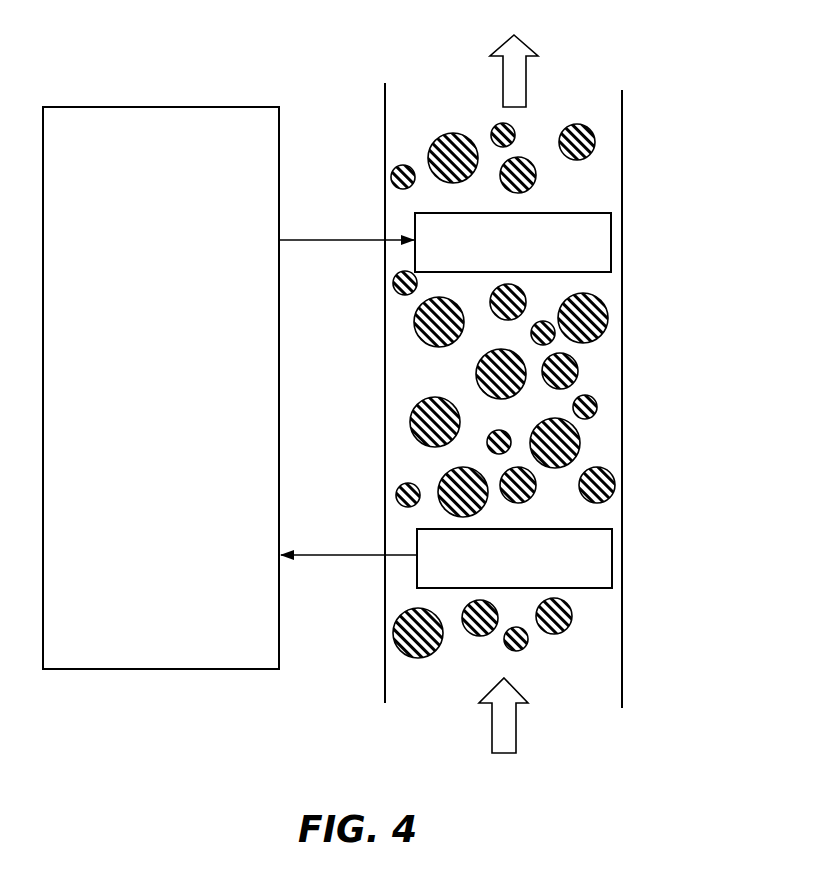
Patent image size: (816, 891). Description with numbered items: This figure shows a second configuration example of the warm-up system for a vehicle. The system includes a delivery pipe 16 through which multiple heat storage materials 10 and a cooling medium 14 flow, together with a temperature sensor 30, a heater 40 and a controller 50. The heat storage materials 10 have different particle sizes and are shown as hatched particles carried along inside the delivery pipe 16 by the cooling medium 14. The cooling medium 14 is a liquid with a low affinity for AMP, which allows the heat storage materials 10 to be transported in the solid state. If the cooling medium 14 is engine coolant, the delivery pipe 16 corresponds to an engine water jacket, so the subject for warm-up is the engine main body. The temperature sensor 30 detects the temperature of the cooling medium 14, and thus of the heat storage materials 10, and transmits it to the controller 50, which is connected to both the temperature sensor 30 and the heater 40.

The heat storage materials 10 is at (503, 122).
The cooling medium 14 is at (597, 375).
The delivery pipe 16 is at (623, 453).
The temperature sensor 30 is at (572, 590).
The heater 40 is at (572, 215).
The controller 50 is at (155, 105).